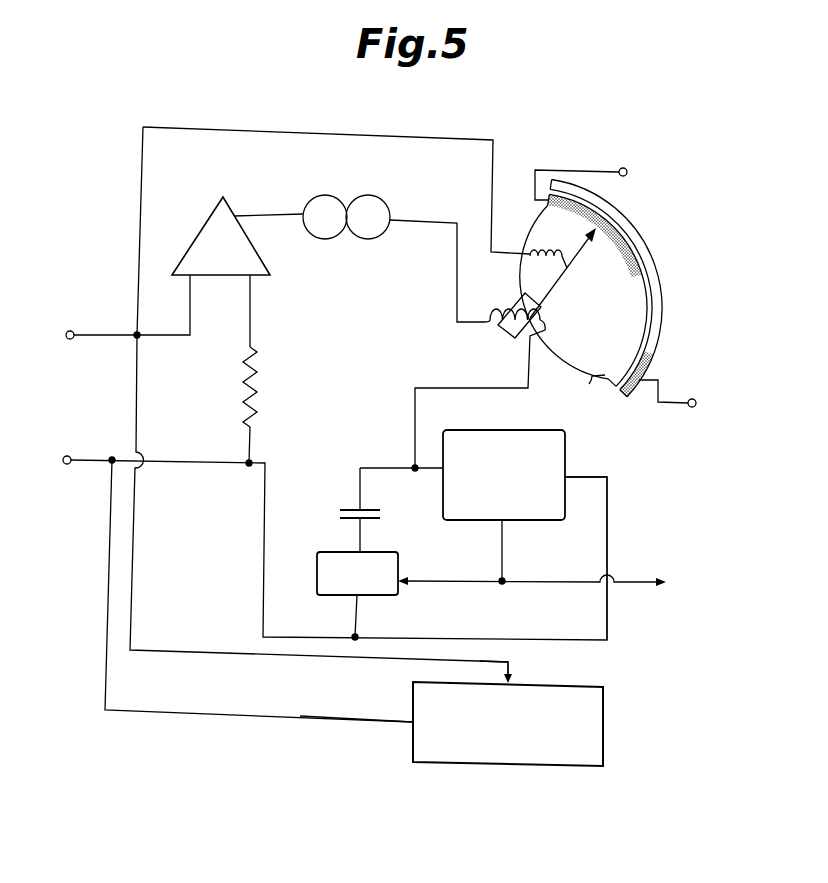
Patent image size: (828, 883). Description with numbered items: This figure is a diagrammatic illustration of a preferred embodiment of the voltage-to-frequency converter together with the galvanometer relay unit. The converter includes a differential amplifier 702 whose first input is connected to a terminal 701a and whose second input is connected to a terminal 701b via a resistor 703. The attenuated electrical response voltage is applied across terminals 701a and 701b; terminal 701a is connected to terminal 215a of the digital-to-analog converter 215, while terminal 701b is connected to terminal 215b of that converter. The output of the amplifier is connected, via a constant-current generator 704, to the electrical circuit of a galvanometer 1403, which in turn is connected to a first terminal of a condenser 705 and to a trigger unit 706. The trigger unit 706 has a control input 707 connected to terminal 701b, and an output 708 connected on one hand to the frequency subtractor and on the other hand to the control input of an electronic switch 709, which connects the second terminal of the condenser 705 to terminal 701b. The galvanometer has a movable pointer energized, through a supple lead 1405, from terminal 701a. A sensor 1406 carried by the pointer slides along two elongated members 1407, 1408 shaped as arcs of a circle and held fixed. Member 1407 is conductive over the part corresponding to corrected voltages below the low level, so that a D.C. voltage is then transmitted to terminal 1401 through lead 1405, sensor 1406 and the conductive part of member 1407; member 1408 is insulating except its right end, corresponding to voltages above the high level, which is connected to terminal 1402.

The differential amplifier 702 is at (212, 226).
The constant-current generator 704 is at (392, 212).
The resistor 703 is at (257, 400).
The terminal 701a is at (80, 322).
The terminal 701b is at (78, 447).
The condenser 705 is at (354, 509).
The trigger unit 706 is at (472, 520).
The control input 707 is at (583, 476).
The output 708 is at (504, 548).
The electronic switch 709 is at (343, 597).
The converter 215 is at (522, 766).
The terminal of converter 215a is at (511, 662).
The terminal of converter 215b is at (383, 722).
The terminal 1401 is at (641, 184).
The terminal 1402 is at (692, 407).
The galvanometer 1403 is at (503, 330).
The supple lead 1405 is at (546, 252).
The sensor 1406 is at (636, 242).
The elongated member 1407 is at (580, 396).
The elongated member 1408 is at (653, 275).